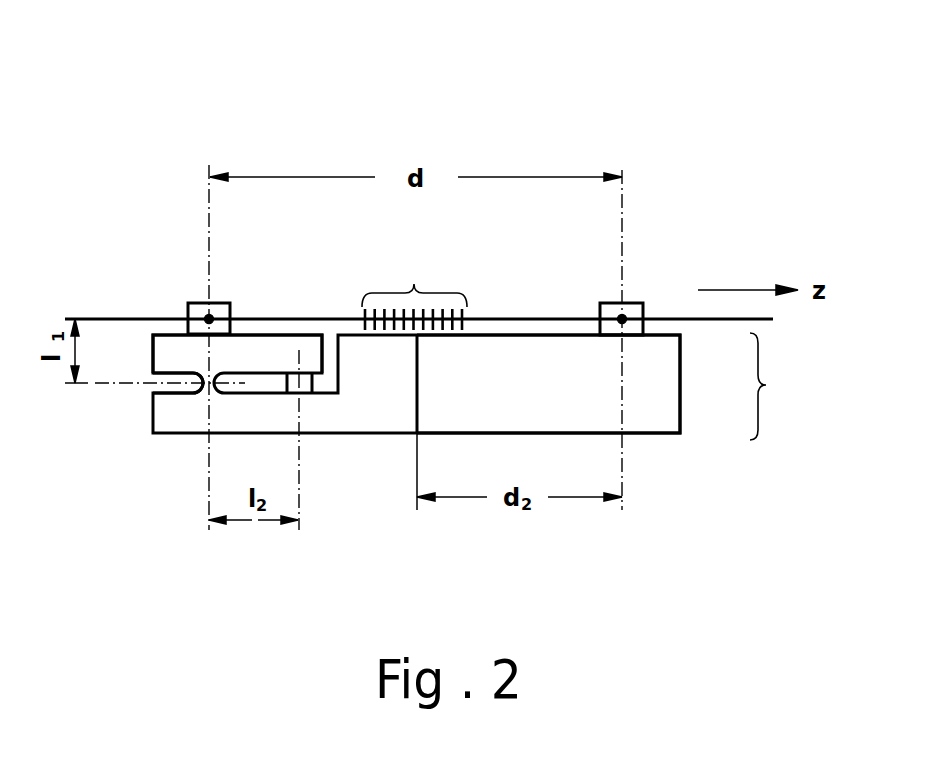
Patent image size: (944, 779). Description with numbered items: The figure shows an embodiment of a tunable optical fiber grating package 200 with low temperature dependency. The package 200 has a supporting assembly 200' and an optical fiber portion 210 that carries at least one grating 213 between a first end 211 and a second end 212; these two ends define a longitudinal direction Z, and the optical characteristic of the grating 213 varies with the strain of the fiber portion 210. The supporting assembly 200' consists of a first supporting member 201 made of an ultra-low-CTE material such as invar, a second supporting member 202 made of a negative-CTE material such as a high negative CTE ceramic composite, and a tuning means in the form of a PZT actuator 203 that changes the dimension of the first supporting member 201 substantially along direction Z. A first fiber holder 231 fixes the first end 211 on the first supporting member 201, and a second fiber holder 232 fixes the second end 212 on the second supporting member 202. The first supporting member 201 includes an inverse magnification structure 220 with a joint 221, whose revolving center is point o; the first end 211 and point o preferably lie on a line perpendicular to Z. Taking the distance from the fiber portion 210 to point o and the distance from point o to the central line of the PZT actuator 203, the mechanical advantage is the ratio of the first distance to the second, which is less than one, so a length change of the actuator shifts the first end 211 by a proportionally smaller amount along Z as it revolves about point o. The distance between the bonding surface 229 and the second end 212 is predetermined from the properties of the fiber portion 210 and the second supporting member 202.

The tunable optical fiber grating package 200 is at (61, 20).
The supporting assembly 200' is at (791, 386).
The first supporting member 201 is at (385, 408).
The second supporting member 202 is at (660, 427).
The PZT actuator 203 is at (297, 395).
The optical fiber portion 210 is at (490, 318).
The first end 211 is at (224, 303).
The second end 212 is at (602, 303).
The grating 213 is at (414, 284).
The inverse magnification structure 220 is at (237, 354).
The joint 221 is at (148, 389).
The bonding surface 229 is at (420, 394).
The first fiber holder 231 is at (196, 303).
The second fiber holder 232 is at (636, 303).
The point O o is at (207, 386).